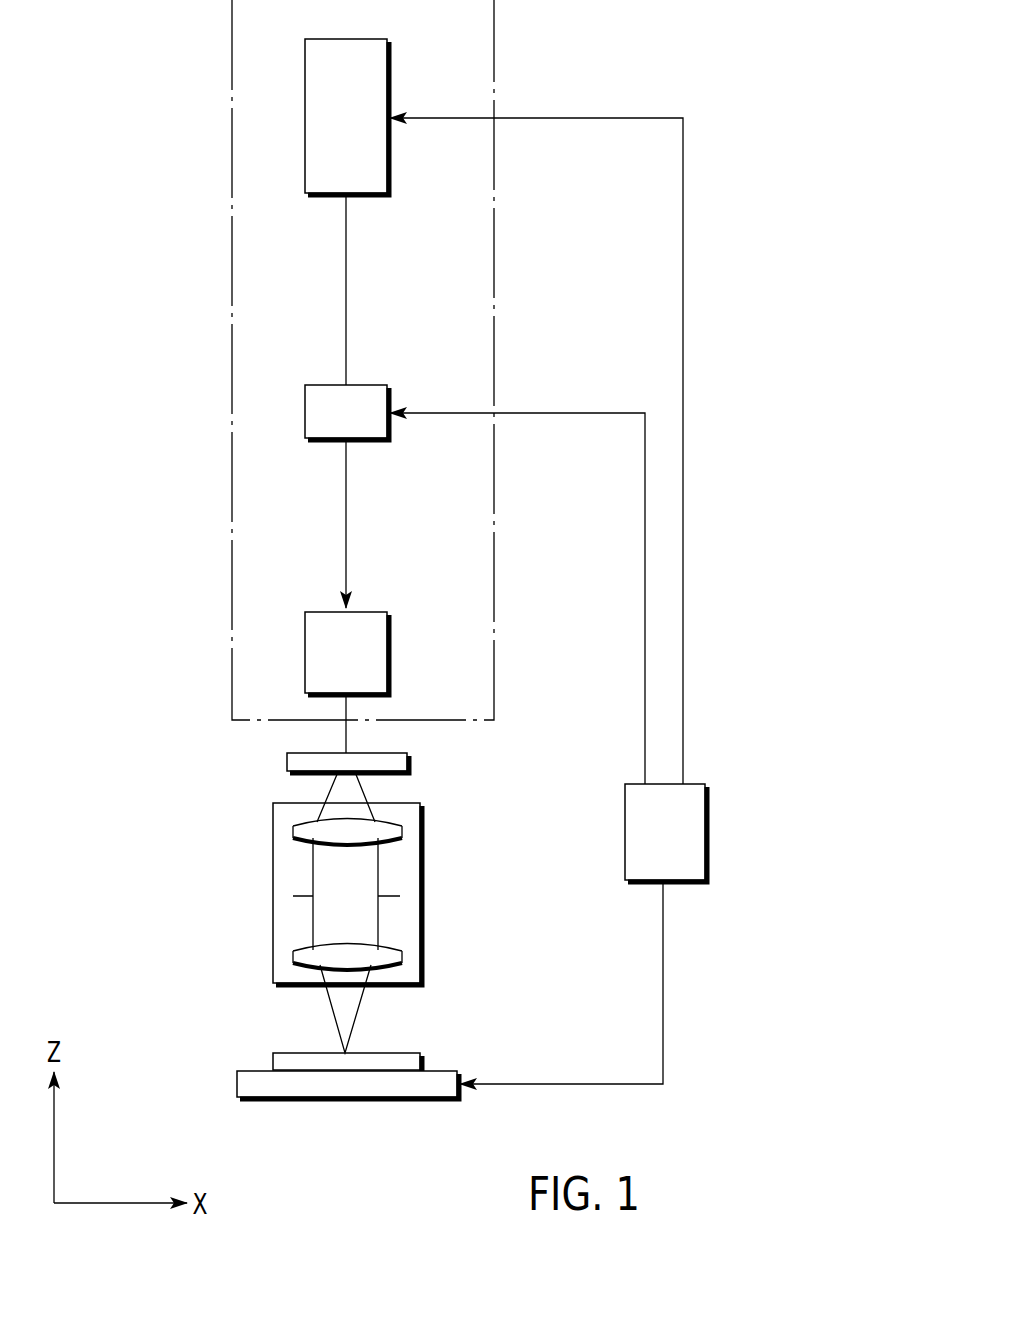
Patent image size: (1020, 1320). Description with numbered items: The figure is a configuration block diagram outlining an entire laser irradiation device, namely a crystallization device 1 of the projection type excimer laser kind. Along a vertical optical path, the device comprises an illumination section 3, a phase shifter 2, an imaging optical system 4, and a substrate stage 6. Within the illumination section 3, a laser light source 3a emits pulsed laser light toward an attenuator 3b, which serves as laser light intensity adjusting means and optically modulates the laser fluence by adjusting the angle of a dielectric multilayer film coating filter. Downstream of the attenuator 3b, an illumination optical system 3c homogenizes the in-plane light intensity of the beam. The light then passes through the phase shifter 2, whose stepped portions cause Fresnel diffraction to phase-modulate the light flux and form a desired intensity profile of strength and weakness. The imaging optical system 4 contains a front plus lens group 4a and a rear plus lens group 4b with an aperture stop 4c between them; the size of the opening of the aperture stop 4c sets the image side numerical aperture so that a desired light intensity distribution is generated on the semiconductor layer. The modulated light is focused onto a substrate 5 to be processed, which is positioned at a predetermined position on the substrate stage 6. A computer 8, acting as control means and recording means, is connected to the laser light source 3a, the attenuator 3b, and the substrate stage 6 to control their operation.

The crystallization device 1 is at (599, 43).
The phase shifter 2 is at (412, 762).
The illumination section 3 is at (494, 272).
The laser light source 3a is at (390, 70).
The attenuator 3b is at (390, 385).
The illumination optical system 3c is at (390, 650).
The imaging optical system 4 is at (361, 912).
The front plus lens group 4a is at (293, 832).
The rear plus lens group 4b is at (293, 957).
The aperture stop 4c is at (293, 896).
The substrate to be processed 5 is at (400, 1052).
The substrate stage 6 is at (440, 1069).
The computer 8 is at (708, 822).